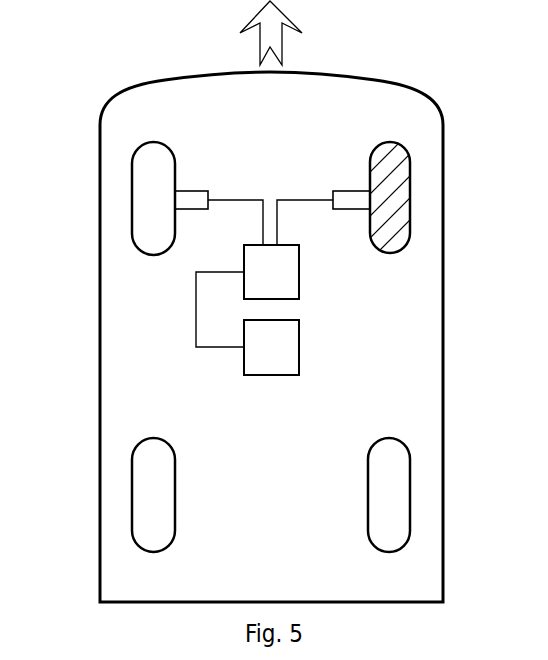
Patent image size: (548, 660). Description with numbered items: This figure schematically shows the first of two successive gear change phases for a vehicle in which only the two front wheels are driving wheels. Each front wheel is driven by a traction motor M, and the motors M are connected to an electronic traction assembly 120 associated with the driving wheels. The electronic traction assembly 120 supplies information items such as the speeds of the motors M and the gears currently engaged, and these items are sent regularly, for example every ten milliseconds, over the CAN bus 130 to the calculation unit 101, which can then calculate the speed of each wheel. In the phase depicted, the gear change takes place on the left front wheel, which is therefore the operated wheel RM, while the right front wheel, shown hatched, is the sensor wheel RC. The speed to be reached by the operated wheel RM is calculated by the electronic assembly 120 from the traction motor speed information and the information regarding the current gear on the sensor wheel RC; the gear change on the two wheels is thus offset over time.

The operated wheel RM is at (151, 175).
The sensor wheel RC is at (391, 173).
The traction motor M is at (186, 193).
The electronic traction assembly 120 is at (299, 263).
The calculation unit 101 is at (299, 333).
The CAN bus 130 is at (196, 310).